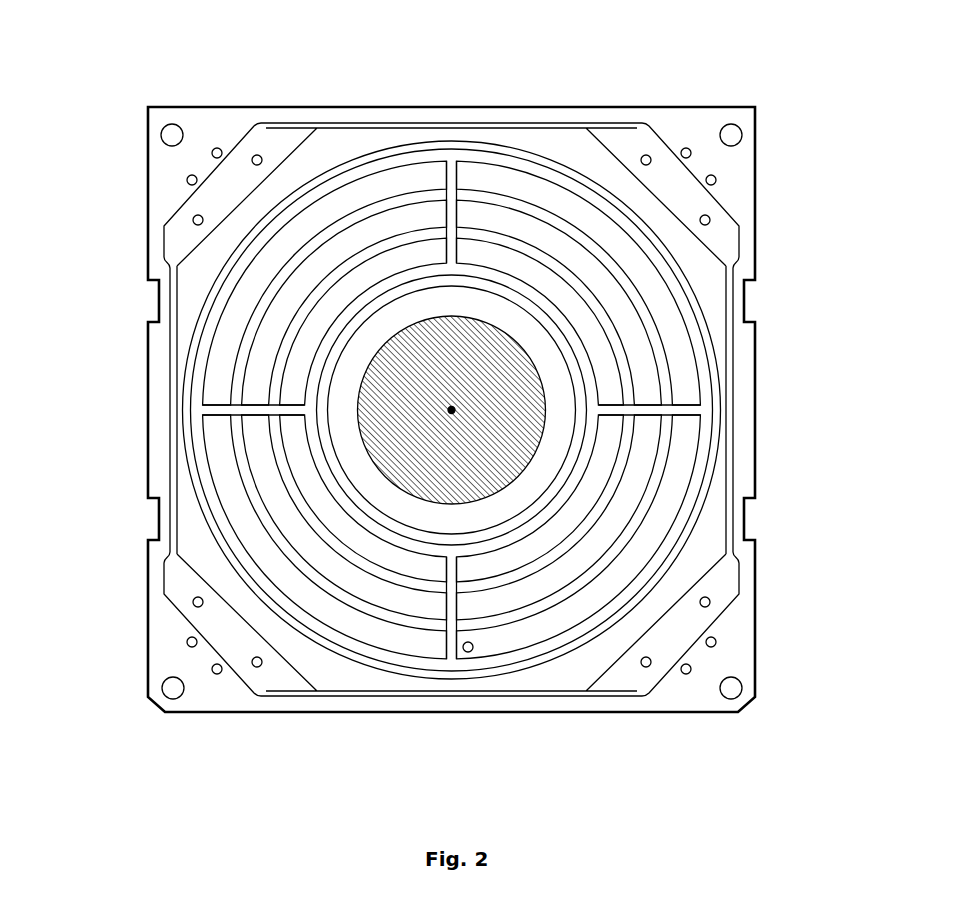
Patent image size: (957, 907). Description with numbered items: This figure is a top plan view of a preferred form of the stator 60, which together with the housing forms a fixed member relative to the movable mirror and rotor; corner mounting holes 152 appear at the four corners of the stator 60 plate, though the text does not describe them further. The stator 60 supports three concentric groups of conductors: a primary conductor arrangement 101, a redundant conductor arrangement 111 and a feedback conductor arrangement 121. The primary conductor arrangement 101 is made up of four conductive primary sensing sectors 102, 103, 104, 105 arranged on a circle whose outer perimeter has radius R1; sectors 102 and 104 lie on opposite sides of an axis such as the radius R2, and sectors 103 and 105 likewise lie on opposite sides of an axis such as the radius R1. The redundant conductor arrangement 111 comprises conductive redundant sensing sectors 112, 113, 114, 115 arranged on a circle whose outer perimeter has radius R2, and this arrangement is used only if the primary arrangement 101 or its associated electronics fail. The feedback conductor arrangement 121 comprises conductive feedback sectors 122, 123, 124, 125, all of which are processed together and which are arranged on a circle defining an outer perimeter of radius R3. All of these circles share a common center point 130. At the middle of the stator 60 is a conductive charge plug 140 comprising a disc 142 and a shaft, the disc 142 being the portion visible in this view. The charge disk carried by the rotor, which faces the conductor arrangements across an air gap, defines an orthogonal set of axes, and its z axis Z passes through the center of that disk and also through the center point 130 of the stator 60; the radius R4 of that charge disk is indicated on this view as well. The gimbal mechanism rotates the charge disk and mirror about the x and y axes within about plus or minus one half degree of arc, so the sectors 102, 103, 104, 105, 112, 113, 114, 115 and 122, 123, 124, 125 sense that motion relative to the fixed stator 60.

The stator 60 is at (522, 135).
The mounting holes 152 is at (168, 124).
The primary conductor arrangement 101 is at (378, 210).
The primary sensing sector 102 is at (248, 384).
The primary sensing sector 103 is at (254, 454).
The primary sensing sector 104 is at (648, 442).
The primary sensing sector 105 is at (650, 358).
The redundant conductor arrangement 111 is at (338, 190).
The redundant sensing sector 112 is at (222, 358).
The redundant sensing sector 113 is at (226, 490).
The redundant sensing sector 114 is at (680, 468).
The redundant sensing sector 115 is at (680, 345).
The feedback conductor arrangement 121 is at (415, 245).
The feedback sector 122 is at (306, 403).
The feedback sector 123 is at (290, 433).
The feedback sector 124 is at (620, 427).
The feedback sector 125 is at (620, 397).
The center point 130 is at (452, 410).
The conductive charge plug 140 is at (452, 410).
The disc 142 is at (407, 328).
The z axis Z is at (452, 410).
The radius R1 is at (452, 410).
The radius R2 is at (452, 410).
The radius R3 is at (452, 410).
The radius R4 is at (452, 410).